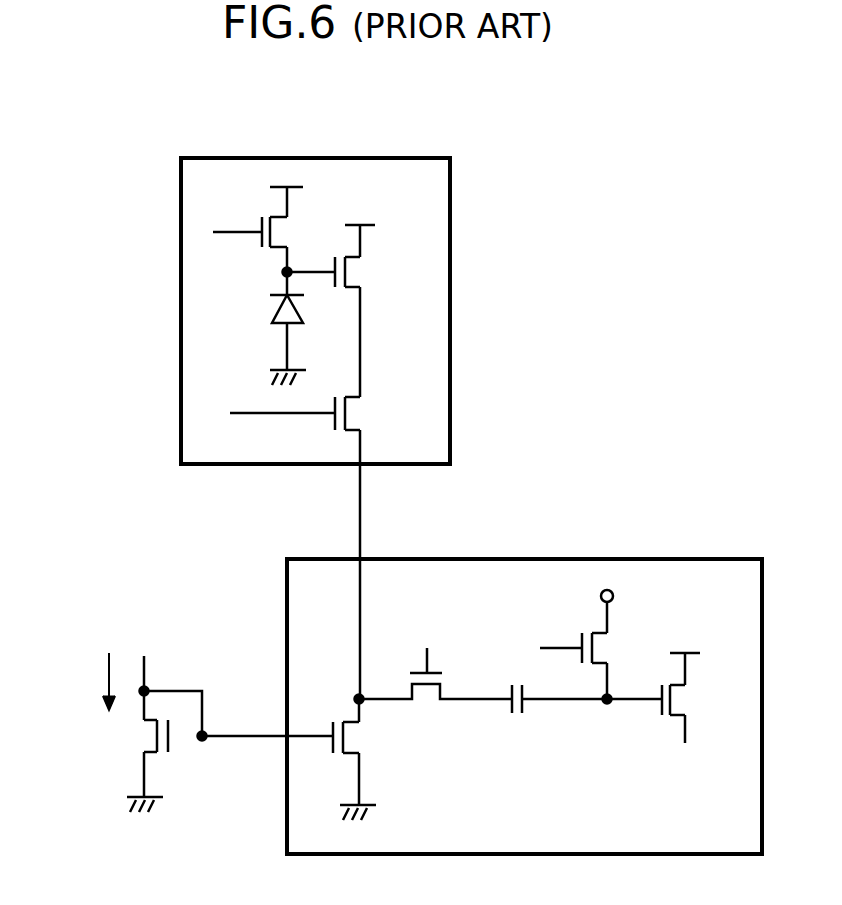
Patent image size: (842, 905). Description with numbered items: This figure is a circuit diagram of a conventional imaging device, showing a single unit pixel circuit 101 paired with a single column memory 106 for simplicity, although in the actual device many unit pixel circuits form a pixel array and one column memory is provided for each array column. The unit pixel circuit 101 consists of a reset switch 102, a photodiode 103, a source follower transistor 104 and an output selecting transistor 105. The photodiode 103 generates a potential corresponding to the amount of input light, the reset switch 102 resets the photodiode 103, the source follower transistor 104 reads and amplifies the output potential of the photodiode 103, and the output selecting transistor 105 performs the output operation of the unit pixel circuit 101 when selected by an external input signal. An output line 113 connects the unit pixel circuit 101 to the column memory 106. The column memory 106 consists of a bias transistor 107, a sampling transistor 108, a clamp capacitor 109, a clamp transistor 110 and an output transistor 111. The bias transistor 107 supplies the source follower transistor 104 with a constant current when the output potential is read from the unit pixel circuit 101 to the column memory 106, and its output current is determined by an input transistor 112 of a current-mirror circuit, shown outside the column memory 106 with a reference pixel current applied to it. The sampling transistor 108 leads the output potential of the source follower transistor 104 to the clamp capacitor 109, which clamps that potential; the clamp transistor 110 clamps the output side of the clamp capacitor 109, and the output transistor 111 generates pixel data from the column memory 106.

The unit pixel circuit 101 is at (387, 153).
The reset switch 102 is at (262, 270).
The photodiode 103 is at (272, 340).
The source follower transistor 104 is at (364, 272).
The output selecting transistor 105 is at (364, 413).
The column memory 106 is at (653, 553).
The bias transistor 107 is at (364, 738).
The sampling transistor 108 is at (435, 667).
The clamp capacitor 109 is at (510, 678).
The clamp transistor 110 is at (633, 644).
The output transistor 111 is at (688, 696).
The input transistor 112 is at (139, 740).
The output line 113 is at (362, 514).